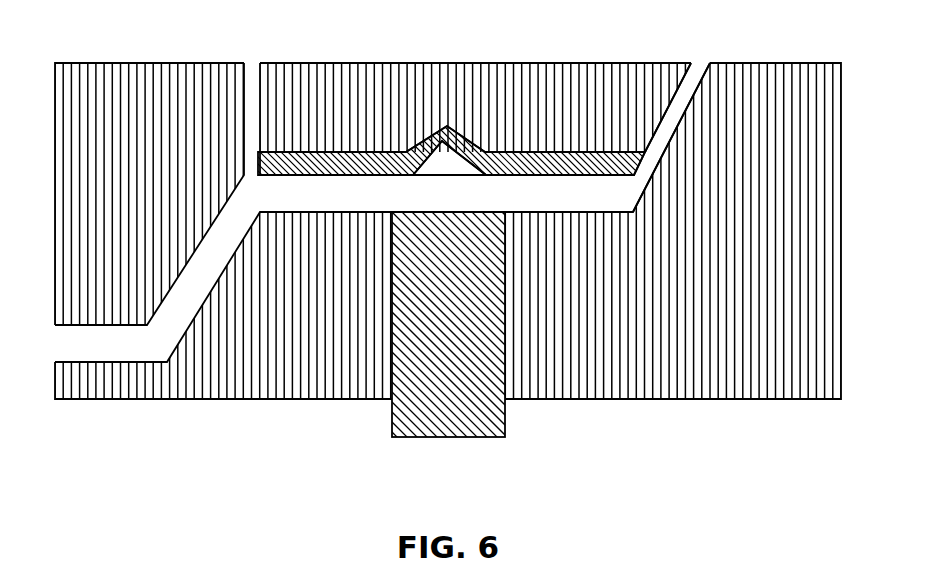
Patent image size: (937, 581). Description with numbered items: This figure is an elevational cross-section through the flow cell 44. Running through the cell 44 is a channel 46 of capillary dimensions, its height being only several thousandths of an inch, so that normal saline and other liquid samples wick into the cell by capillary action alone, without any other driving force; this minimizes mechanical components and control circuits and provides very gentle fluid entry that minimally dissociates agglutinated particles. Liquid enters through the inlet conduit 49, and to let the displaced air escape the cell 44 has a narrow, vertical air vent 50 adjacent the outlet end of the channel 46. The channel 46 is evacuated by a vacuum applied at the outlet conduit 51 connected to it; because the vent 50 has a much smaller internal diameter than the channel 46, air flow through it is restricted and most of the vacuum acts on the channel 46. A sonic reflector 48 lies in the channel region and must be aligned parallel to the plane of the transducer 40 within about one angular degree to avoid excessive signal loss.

The cell 44 is at (851, 237).
The air vent 50 is at (252, 63).
The outlet conduit 51 is at (65, 347).
The inlet conduit 49 is at (705, 63).
The sonic reflector 48 is at (530, 150).
The channel 46 is at (410, 152).
The transducer 40 is at (467, 417).